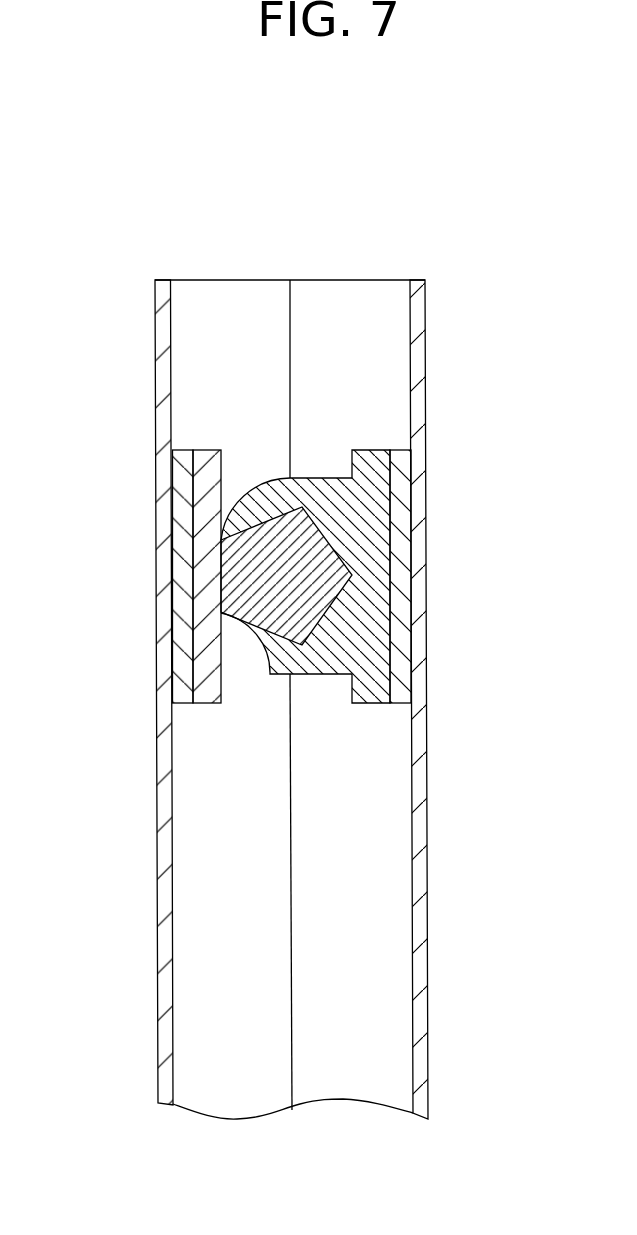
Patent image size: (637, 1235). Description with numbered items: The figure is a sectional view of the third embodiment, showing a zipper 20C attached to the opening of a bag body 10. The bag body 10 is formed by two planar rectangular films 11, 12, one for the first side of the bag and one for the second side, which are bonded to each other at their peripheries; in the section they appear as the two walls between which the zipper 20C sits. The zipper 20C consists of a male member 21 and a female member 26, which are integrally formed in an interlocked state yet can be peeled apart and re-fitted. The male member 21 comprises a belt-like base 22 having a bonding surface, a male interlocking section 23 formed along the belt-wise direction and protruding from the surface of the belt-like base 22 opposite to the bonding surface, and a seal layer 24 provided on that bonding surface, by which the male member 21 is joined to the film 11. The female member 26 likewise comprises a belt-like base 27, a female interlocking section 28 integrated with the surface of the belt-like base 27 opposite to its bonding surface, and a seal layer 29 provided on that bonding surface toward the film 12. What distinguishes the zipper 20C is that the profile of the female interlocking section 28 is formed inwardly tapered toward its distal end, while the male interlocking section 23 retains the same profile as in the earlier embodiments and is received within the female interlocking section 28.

The bag body 10 is at (294, 699).
The film 11 is at (166, 1088).
The film 12 is at (423, 1098).
The zipper 20C is at (288, 584).
The male member 21 is at (127, 604).
The belt-like base 22 is at (207, 668).
The male interlocking section 23 is at (280, 612).
The seal layer 24 is at (184, 627).
The female member 26 is at (382, 549).
The belt-like base 27 is at (370, 499).
The female interlocking section 28 is at (312, 495).
The seal layer 29 is at (441, 576).